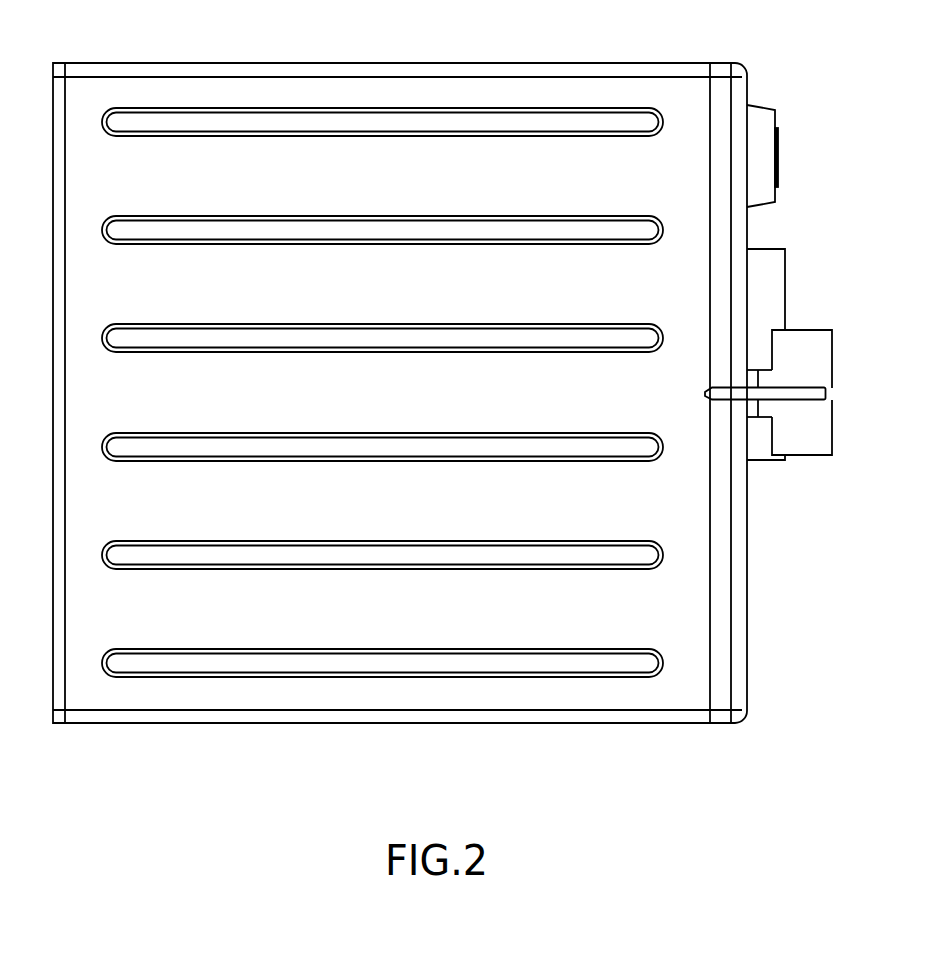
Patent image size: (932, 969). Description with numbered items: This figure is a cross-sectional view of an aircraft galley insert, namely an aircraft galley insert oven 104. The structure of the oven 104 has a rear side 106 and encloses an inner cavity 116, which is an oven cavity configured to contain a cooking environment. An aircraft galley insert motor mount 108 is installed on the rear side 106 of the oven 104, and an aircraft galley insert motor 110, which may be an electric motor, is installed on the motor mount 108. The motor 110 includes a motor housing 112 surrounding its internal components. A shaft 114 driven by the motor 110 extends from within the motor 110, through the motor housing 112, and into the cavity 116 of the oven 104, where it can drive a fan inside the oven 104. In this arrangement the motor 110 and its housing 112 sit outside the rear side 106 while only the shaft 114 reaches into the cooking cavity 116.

The aircraft galley insert oven 104 is at (382, 62).
The rear side 106 is at (748, 655).
The aircraft galley insert motor mount 108 is at (786, 292).
The aircraft galley insert motor 110 is at (833, 348).
The motor housing 112 is at (833, 424).
The shaft 114 is at (798, 395).
The inner cavity 116 is at (630, 612).